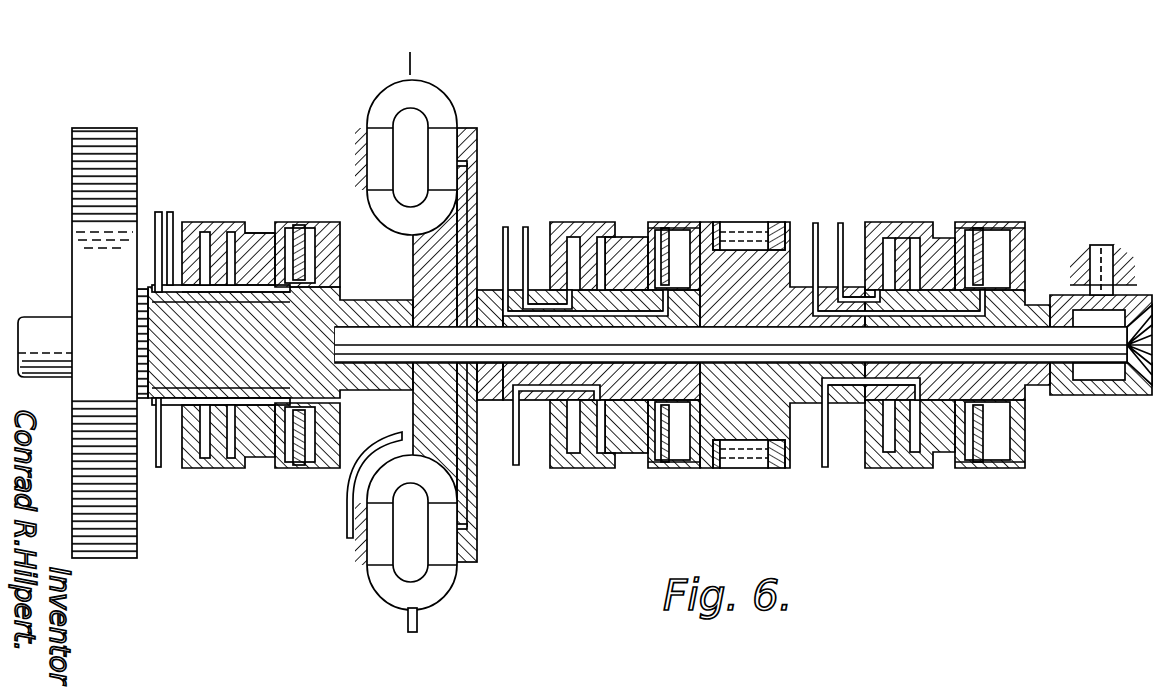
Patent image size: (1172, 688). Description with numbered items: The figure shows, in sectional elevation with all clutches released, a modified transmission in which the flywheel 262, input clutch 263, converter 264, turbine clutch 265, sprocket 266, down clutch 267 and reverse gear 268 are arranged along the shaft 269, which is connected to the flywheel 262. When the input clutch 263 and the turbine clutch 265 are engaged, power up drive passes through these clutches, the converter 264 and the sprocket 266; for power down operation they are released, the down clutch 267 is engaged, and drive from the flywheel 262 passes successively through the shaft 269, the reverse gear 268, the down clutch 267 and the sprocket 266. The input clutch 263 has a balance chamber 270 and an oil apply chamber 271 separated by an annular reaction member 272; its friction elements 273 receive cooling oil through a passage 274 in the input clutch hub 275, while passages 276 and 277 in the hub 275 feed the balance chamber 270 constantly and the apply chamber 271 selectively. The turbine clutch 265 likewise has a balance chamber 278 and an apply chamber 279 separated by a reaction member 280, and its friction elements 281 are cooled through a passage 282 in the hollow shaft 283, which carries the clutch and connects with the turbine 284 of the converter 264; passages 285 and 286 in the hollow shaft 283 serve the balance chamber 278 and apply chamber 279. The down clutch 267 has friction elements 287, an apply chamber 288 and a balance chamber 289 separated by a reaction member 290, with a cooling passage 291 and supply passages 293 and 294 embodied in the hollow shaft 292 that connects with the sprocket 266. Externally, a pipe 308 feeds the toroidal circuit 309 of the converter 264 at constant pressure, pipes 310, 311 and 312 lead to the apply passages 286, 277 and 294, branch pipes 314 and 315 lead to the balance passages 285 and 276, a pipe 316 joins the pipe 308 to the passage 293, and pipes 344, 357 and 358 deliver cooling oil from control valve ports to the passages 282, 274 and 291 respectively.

The flywheel 262 is at (95, 126).
The input clutch 263 is at (228, 206).
The converter 264 is at (410, 78).
The turbine clutch 265 is at (607, 191).
The sprocket 266 is at (740, 196).
The down clutch 267 is at (917, 181).
The reverse gear 268 is at (1097, 214).
The shaft 269 is at (455, 353).
The balance chamber 270 is at (205, 229).
The oil apply chamber 271 is at (270, 233).
The annular reaction member 272 is at (236, 229).
The friction elements 273 is at (307, 228).
The passage 274 is at (240, 302).
The input clutch hub 275 is at (283, 367).
The passage 276 is at (192, 302).
The passage 277 is at (204, 398).
The balance chamber 278 is at (572, 240).
The oil apply chamber 279 is at (603, 240).
The reaction member 280 is at (590, 240).
The friction elements 281 is at (668, 226).
The passage 282 is at (617, 316).
The hollow shaft 283 is at (487, 291).
The turbine 284 is at (447, 137).
The passage 285 is at (546, 316).
The passage 286 is at (516, 385).
The friction elements 287 is at (986, 214).
The apply chamber 288 is at (917, 240).
The balance chamber 289 is at (887, 240).
The reaction member 290 is at (897, 240).
The passage 291 is at (933, 316).
The hollow shaft 292 is at (782, 345).
The passage 293 is at (862, 316).
The passage 294 is at (828, 378).
The pipe 308 is at (347, 497).
The toroidal circuit 309 is at (437, 95).
The pipe 310 is at (516, 466).
The pipe 311 is at (158, 467).
The pipe 312 is at (828, 468).
The pipe 314 is at (525, 226).
The pipe 315 is at (171, 211).
The pipe 316 is at (841, 222).
The pipe 344 is at (505, 226).
The pipe 357 is at (157, 211).
The pipe 358 is at (815, 222).